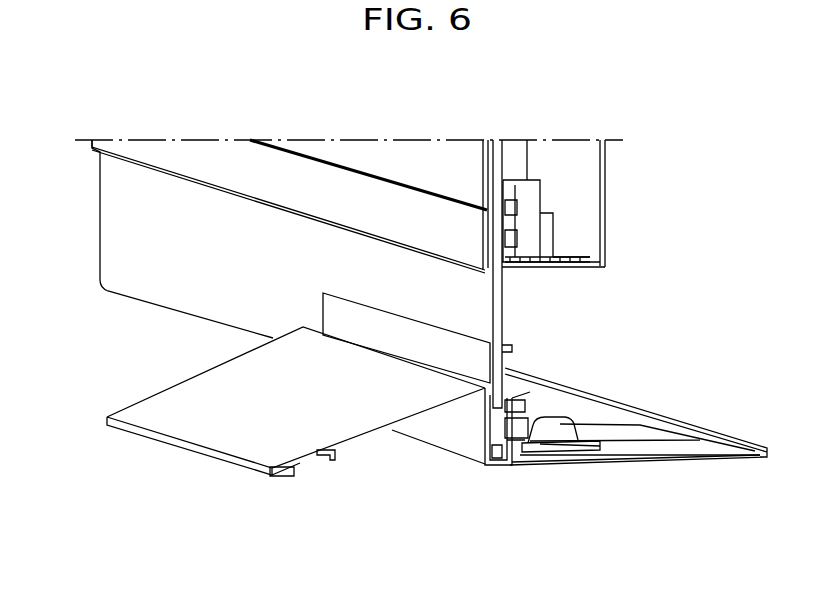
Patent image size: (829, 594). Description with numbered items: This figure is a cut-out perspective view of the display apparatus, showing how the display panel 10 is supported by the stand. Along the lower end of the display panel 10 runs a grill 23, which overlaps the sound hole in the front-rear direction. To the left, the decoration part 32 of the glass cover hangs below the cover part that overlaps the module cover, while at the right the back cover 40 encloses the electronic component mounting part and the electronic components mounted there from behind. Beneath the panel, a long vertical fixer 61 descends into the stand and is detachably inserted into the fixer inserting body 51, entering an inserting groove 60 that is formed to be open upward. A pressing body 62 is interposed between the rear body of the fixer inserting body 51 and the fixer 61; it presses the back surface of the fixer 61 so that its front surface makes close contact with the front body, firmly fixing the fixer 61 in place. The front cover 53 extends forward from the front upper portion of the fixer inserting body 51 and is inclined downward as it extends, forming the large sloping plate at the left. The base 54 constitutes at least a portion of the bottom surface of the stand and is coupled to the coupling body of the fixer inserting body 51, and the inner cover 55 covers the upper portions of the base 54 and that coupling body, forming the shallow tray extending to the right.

The display panel 10 is at (405, 155).
The grill 23 is at (450, 222).
The decoration part 32 is at (115, 226).
The back cover 40 is at (585, 190).
The fixer inserting body 51 is at (500, 455).
The front cover 53 is at (400, 432).
The base 54 is at (662, 455).
The inner cover 55 is at (635, 430).
The inserting groove 60 is at (502, 440).
The fixer 61 is at (513, 352).
The pressing body 62 is at (533, 412).